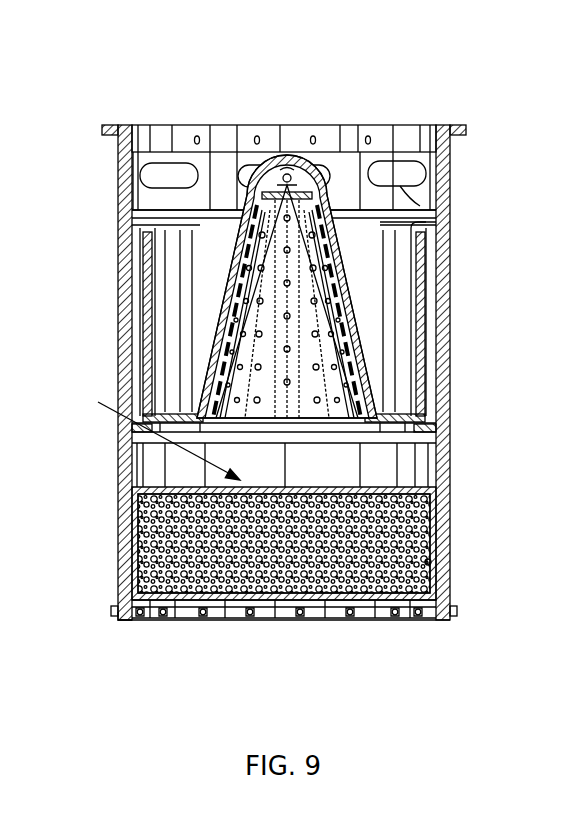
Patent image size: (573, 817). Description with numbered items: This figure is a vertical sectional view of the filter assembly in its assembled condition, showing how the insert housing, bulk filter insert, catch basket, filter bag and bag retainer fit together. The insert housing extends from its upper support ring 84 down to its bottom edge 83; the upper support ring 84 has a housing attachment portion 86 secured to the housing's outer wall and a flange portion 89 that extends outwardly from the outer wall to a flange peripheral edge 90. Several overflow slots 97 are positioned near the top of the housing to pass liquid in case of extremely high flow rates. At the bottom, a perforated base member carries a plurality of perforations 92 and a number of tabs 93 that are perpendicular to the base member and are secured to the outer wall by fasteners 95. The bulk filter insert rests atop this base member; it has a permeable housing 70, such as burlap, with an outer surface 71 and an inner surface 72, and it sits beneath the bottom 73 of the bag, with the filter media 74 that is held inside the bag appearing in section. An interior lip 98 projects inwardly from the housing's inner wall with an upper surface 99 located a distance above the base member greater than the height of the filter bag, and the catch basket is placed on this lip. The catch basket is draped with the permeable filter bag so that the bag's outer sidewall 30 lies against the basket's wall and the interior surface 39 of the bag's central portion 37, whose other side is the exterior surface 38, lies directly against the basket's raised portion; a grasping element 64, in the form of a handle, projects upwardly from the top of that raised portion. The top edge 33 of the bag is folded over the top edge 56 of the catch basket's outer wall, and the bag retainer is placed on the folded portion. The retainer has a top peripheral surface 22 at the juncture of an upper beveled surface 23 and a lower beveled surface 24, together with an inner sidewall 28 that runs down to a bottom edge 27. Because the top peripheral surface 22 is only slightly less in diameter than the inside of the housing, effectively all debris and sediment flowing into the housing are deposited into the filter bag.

The top peripheral surface 22 is at (140, 212).
The upper beveled surface 23 is at (428, 208).
The lower beveled surface 24 is at (140, 220).
The bottom edge 27 is at (146, 240).
The inner sidewall 28 is at (155, 195).
The outer sidewall 30 is at (424, 376).
The top edge 33 is at (424, 280).
The central portion 37 is at (368, 355).
The exterior surface 38 is at (222, 302).
The interior surface 39 is at (268, 172).
The top edge 56 is at (430, 232).
The grasping element 64 is at (287, 185).
The permeable housing 70 is at (98, 402).
The outer surface 71 is at (150, 490).
The inner surface 72 is at (395, 557).
The bottom 73 is at (340, 620).
The filter media particles 74 is at (428, 562).
The bottom edge 83 is at (124, 621).
The upper support ring 84 is at (328, 122).
The housing attachment portion 86 is at (350, 130).
The flange portion 89 is at (124, 124).
The flange peripheral edge 90 is at (102, 128).
The perforations 92 is at (243, 620).
The tabs 93 is at (300, 620).
The fasteners 95 is at (111, 611).
The overflow slots 97 is at (426, 172).
The interior lip 98 is at (395, 500).
The upper surface 99 is at (432, 422).